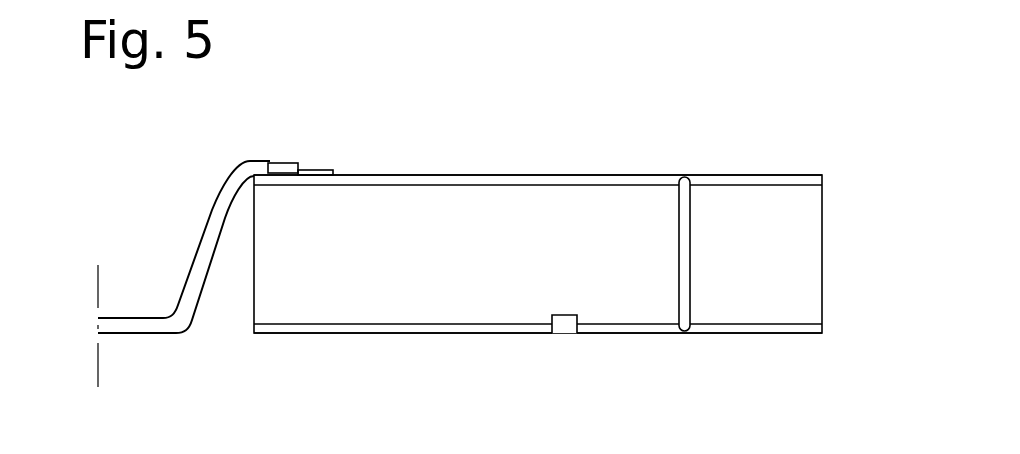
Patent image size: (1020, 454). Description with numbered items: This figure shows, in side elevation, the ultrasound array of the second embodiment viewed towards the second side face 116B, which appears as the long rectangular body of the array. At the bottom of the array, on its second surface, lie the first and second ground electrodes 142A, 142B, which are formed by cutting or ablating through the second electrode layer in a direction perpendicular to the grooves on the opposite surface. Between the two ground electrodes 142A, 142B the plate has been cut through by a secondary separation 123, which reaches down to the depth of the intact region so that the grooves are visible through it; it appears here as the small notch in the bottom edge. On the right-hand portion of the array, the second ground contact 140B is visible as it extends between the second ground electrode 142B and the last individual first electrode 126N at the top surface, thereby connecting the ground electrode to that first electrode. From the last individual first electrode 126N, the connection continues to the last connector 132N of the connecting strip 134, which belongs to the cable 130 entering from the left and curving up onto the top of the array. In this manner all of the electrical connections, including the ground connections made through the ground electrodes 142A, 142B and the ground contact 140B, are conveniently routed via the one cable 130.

The cable 130 is at (195, 230).
The connecting strip 134 is at (274, 163).
The last connector 132N is at (318, 171).
The last individual first electrode 126N is at (760, 175).
The second side face 116B is at (506, 263).
The second ground contact 140B is at (686, 289).
The secondary separation 123 is at (567, 326).
The first ground electrode 142A is at (402, 335).
The second ground electrode 142B is at (797, 335).